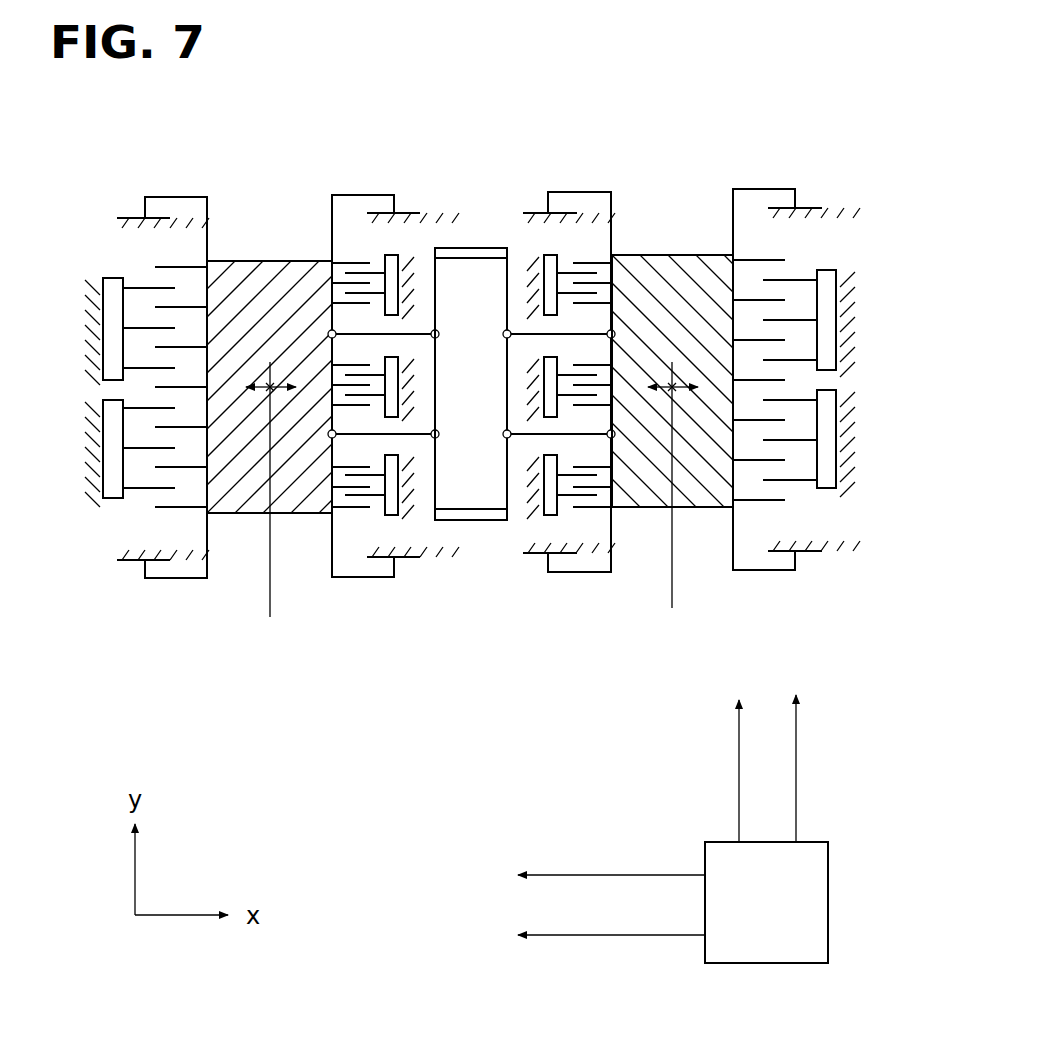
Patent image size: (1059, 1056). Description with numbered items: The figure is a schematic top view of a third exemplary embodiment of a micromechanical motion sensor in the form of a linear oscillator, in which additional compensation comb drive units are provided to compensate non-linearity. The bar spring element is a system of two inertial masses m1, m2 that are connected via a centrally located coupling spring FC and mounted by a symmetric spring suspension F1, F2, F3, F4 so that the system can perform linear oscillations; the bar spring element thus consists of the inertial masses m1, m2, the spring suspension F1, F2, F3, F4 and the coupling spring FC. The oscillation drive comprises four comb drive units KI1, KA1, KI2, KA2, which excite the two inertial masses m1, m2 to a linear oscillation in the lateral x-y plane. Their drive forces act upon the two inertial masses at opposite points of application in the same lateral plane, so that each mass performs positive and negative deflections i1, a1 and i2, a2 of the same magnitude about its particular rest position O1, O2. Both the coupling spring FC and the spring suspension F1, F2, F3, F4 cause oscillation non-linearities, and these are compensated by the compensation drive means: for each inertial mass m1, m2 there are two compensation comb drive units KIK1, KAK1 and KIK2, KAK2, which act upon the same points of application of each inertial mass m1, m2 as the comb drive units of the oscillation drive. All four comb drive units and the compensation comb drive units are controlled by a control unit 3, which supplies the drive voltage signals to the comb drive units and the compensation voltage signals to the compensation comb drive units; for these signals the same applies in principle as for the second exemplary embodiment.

The spring suspension F1 is at (177, 197).
The spring suspension F2 is at (362, 195).
The spring suspension F3 is at (578, 192).
The spring suspension F4 is at (765, 189).
The comb drive unit KA1 is at (113, 278).
The compensation comb drive unit KAK1 is at (113, 500).
The comb drive unit KI1 is at (392, 255).
The compensation comb drive unit KIK1 is at (386, 362).
The comb drive unit KA2 is at (548, 253).
The compensation comb drive unit KAK2 is at (558, 355).
The comb drive unit KI2 is at (827, 270).
The compensation comb drive unit KIK2 is at (826, 490).
The inertial mass m1 is at (273, 261).
The inertial mass m2 is at (676, 255).
The rest position O1 is at (274, 515).
The rest position O2 is at (679, 515).
The deflection a1 is at (242, 391).
The deflection i1 is at (296, 391).
The deflection a2 is at (644, 391).
The deflection i2 is at (699, 391).
The coupling spring FC is at (465, 498).
The control unit 3 is at (767, 965).